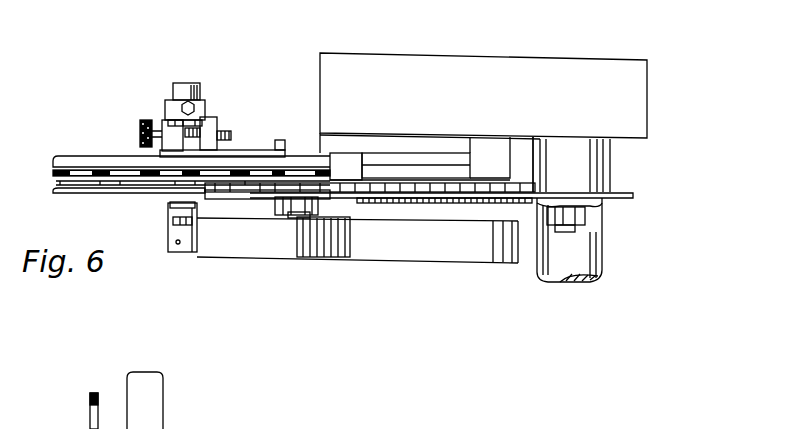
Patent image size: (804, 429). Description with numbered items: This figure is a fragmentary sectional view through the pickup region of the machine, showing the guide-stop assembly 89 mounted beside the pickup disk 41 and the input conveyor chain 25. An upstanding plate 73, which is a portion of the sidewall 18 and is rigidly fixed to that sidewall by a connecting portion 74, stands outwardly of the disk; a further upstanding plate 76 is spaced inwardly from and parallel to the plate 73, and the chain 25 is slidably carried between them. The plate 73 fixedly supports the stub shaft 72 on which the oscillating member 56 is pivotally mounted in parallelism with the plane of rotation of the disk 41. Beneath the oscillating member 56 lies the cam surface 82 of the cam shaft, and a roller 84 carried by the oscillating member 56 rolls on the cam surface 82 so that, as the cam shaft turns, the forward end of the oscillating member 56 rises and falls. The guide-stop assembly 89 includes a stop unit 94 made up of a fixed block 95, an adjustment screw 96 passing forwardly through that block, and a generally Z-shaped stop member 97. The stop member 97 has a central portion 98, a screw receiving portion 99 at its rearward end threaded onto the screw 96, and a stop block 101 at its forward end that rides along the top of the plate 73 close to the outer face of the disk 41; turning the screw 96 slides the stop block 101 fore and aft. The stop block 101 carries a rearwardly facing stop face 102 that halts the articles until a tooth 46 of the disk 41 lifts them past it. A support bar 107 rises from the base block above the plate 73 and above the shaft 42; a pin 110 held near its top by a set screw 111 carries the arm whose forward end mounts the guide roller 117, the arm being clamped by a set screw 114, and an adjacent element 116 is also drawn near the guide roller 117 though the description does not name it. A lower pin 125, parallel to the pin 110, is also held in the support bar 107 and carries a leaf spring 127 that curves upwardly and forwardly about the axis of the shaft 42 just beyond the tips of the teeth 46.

The sidewall 18 is at (647, 79).
The connecting portion 74 is at (430, 155).
The stop block 101 is at (349, 163).
The plate 73 is at (96, 163).
The chain 25 is at (74, 173).
The upstanding plate 76 is at (100, 193).
The stop face 102 is at (323, 177).
The pickup disk 41 is at (632, 194).
The shaft 42 is at (605, 172).
The cam surface 82 is at (593, 236).
The roller 84 is at (570, 231).
The guide-stop assembly 89 is at (190, 52).
The adjustment screw 96 is at (140, 132).
The fixed block 95 is at (165, 125).
The support bar 107 is at (172, 108).
The set screw 111 is at (183, 104).
The pin 110 is at (190, 83).
The screw receiving portion 99 is at (208, 128).
The stop unit 94 is at (234, 118).
The stop member 97 is at (254, 143).
The central portion 98 is at (292, 138).
The pin 125 is at (185, 252).
The set screw 114 is at (170, 222).
The leaf spring 127 is at (442, 251).
The oscillating member 56 is at (508, 203).
The stub shaft 72 is at (345, 218).
The guide roller 117 is at (287, 215).
The plate 116 is at (299, 219).
The tooth 46 is at (90, 396).